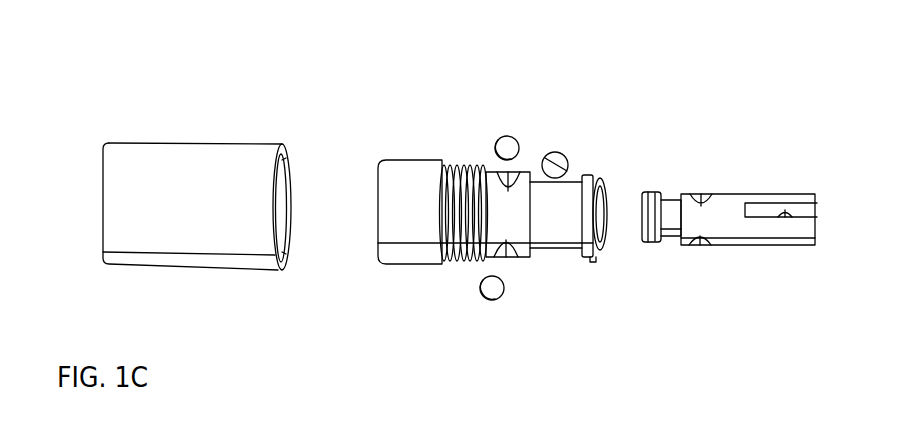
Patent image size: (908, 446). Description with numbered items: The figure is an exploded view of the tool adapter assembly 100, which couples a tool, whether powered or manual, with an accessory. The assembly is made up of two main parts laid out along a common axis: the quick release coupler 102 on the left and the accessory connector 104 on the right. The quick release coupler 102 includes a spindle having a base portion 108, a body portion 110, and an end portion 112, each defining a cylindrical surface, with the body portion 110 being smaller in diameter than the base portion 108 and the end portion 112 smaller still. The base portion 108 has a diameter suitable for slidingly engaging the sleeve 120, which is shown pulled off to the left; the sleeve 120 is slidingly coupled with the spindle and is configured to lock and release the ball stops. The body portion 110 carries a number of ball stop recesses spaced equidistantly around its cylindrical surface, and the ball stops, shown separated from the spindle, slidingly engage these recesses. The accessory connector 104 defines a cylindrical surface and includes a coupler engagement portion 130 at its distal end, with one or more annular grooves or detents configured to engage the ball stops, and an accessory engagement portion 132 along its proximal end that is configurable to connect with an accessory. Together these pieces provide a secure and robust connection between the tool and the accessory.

The tool adapter assembly 100 is at (145, 50).
The quick release coupler 102 is at (608, 124).
The accessory connector 104 is at (825, 123).
The base portion 108 is at (452, 328).
The body portion 110 is at (530, 328).
The end portion 112 is at (608, 328).
The sleeve 120 is at (110, 180).
The coupler engagement portion 130 is at (728, 302).
The accessory engagement portion 132 is at (815, 302).